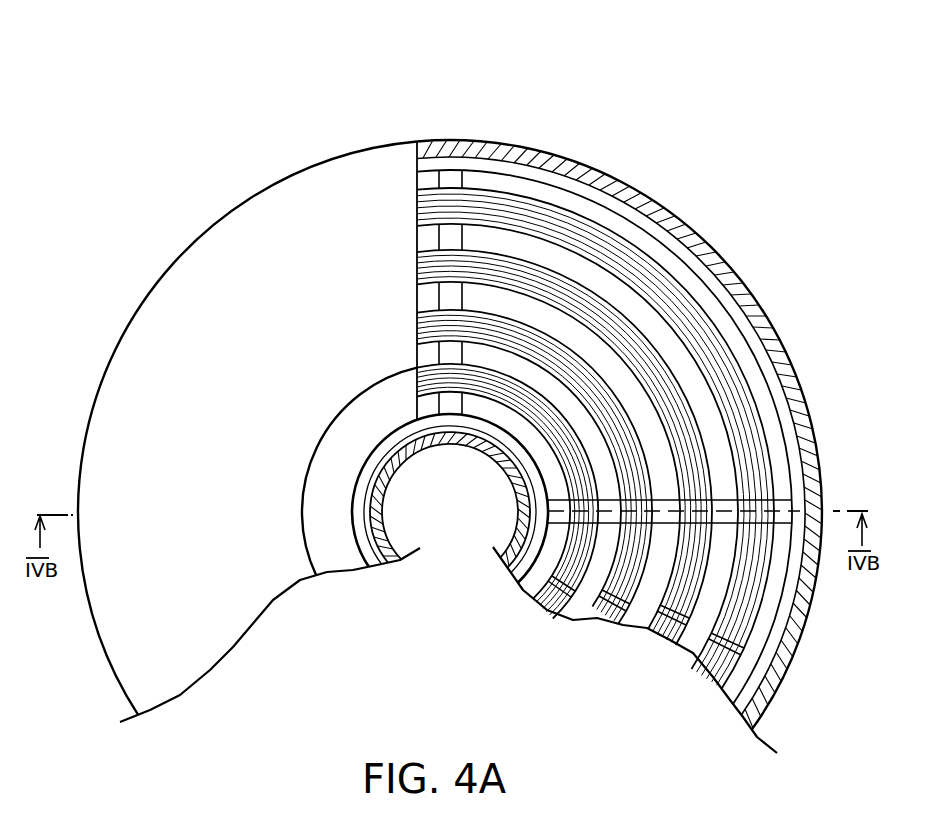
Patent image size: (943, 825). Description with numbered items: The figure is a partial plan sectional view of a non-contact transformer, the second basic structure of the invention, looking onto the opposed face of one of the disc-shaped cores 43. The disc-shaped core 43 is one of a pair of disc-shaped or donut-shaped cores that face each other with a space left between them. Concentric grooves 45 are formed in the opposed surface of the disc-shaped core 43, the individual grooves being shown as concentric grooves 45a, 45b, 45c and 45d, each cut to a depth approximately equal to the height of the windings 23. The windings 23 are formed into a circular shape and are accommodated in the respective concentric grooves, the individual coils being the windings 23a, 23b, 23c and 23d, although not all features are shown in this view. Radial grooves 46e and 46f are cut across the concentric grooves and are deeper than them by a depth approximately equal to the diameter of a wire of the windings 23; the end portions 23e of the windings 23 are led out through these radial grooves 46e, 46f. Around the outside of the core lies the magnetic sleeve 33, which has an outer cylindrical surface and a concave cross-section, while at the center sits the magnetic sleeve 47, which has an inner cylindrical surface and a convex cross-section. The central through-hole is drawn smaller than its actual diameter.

The windings 23 is at (732, 93).
The winding 23a is at (560, 427).
The winding 23b is at (558, 360).
The winding 23c is at (533, 280).
The winding 23d is at (483, 202).
The end portions of the windings 23e is at (798, 497).
The magnetic sleeve 33 is at (215, 627).
The disc-shaped core 43 is at (333, 554).
The concentric grooves 45 is at (704, 716).
The concentric groove 45a is at (563, 619).
The concentric groove 45b is at (622, 622).
The concentric groove 45c is at (680, 632).
The concentric groove 45d is at (712, 662).
The radial groove 46e is at (752, 496).
The radial groove 46f is at (452, 185).
The magnetic sleeve 47 is at (398, 563).